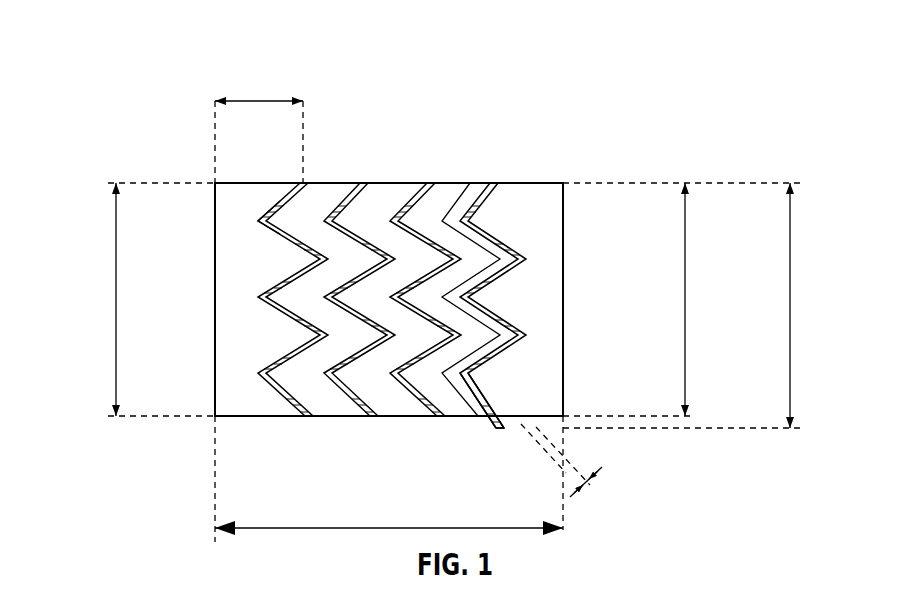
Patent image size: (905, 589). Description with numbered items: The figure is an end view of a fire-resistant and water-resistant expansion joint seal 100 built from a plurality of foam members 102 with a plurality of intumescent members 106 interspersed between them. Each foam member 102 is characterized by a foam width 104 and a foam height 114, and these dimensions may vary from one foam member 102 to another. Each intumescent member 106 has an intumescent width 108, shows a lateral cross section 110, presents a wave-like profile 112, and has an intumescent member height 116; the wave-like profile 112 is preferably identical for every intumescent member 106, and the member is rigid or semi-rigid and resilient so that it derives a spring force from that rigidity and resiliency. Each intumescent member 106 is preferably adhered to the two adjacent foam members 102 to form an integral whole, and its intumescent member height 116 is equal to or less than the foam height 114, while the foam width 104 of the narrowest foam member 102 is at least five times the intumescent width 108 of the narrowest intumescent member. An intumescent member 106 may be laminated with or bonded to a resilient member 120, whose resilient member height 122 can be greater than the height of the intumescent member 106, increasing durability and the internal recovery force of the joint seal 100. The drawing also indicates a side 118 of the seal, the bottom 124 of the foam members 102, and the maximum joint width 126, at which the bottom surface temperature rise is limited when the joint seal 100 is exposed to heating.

The fire-resistant and water-resistant expansion joint seal 100 is at (112, 37).
The foam member 102 is at (248, 392).
The foam width 104 is at (258, 100).
The intumescent member 106 is at (312, 182).
The intumescent width 108 is at (606, 462).
The lateral cross section 110 is at (507, 190).
The wave-like profile 112 is at (275, 227).
The foam height 114 is at (687, 300).
The intumescent member height 116 is at (116, 298).
The side surface 118 is at (213, 355).
The resilient member 120 is at (497, 430).
The resilient member height 122 is at (793, 347).
The bottom 124 is at (277, 420).
The maximum joint width 126 is at (398, 527).